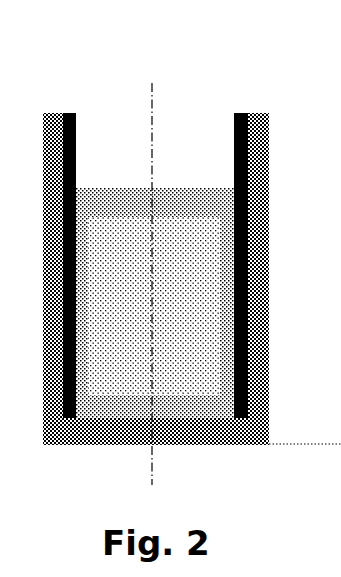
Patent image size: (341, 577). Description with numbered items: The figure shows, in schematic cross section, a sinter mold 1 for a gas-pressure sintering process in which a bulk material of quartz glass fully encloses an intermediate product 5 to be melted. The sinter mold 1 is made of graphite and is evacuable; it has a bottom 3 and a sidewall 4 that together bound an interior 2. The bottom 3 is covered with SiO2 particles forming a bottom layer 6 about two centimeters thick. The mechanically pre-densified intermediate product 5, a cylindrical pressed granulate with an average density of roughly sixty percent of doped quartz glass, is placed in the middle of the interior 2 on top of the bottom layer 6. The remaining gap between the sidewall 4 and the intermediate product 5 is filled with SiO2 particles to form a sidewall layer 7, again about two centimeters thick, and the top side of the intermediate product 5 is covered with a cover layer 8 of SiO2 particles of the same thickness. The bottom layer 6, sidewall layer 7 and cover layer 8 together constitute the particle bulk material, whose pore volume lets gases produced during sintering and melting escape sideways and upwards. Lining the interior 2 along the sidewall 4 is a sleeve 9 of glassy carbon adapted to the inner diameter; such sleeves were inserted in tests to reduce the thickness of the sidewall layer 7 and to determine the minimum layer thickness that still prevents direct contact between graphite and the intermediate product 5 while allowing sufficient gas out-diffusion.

The sinter mold 1 is at (278, 329).
The interior 2 is at (102, 161).
The bottom 3 is at (195, 425).
The sidewall 4 is at (50, 333).
The intermediate product 5 is at (188, 253).
The bottom layer 6 is at (120, 410).
The sidewall layer 7 is at (225, 240).
The cover layer 8 is at (200, 203).
The sleeve 9 is at (235, 143).